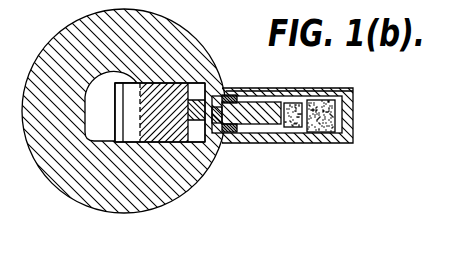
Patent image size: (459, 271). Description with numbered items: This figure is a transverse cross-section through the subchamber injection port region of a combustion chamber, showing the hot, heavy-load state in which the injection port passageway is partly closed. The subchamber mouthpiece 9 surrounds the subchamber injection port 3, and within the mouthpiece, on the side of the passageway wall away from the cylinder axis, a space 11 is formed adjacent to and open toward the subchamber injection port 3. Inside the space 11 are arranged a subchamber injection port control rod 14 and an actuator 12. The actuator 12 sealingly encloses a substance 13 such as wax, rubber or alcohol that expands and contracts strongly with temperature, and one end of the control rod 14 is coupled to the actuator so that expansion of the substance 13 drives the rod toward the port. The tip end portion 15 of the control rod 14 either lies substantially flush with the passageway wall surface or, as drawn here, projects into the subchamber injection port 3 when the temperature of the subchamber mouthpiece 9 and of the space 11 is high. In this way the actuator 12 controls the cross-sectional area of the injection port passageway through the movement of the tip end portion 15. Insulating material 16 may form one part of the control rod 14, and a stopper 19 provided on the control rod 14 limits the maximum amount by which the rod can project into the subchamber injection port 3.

The subchamber injection port 3 is at (93, 138).
The subchamber mouthpiece 9 is at (195, 140).
The space 11 is at (279, 142).
The actuator 12 is at (254, 142).
The substance 13 is at (316, 128).
The subchamber injection port control rod 14 is at (158, 138).
The tip end portion 15 is at (120, 133).
The insulating material 16 is at (203, 178).
The stopper 19 is at (217, 145).